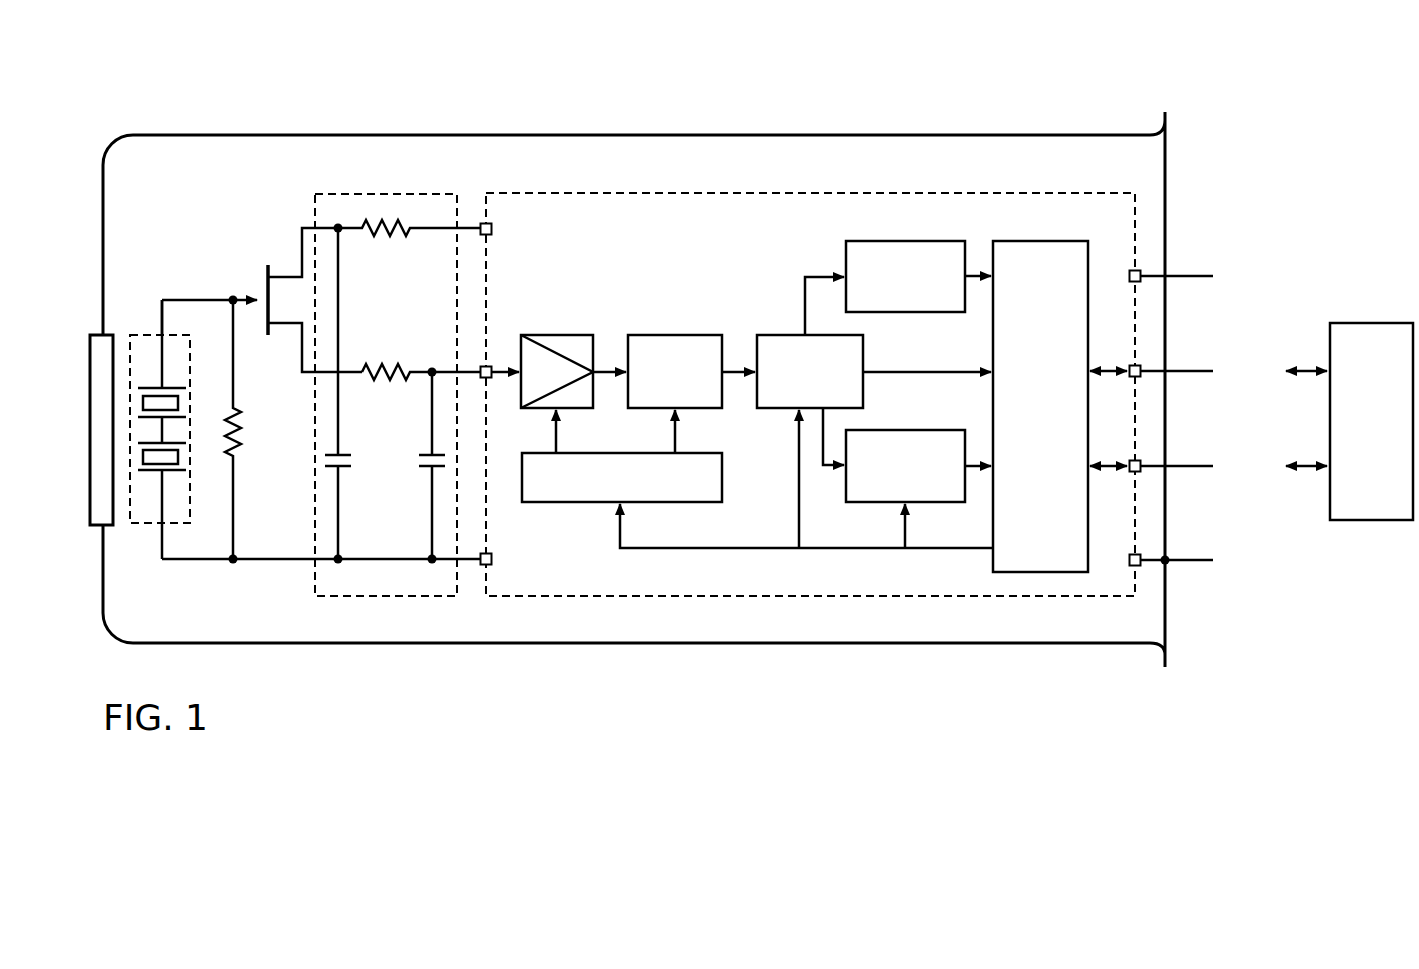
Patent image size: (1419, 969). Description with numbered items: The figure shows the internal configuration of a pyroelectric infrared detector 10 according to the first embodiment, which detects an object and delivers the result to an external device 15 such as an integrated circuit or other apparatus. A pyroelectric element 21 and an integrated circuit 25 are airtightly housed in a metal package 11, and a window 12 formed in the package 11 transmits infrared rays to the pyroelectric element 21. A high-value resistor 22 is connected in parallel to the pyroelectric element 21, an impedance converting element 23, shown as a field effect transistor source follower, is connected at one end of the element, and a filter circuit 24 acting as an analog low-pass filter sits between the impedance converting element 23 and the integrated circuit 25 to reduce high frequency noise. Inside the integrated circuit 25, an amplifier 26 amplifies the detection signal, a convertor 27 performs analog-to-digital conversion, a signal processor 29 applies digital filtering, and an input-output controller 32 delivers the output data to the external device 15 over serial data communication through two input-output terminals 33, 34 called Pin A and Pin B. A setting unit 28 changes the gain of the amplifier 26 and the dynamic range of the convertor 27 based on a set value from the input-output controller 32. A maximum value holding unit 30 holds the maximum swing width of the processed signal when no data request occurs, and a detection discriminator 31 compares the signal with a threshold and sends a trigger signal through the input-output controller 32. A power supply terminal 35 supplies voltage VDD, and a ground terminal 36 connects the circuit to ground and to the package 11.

The pyroelectric infrared detector 10 is at (1192, 100).
The package 11 is at (772, 135).
The window 12 is at (108, 335).
The external device 15 is at (1375, 325).
The pyroelectric element 21 is at (148, 523).
The resistor 22 is at (240, 452).
The impedance converting element 23 is at (258, 275).
The filter circuit 24 is at (315, 200).
The integrated circuit 25 is at (533, 200).
The amplifier 26 is at (572, 337).
The convertor 27 is at (668, 337).
The setting unit 28 is at (555, 502).
The signal processor 29 is at (773, 340).
The maximum value holding unit 30 is at (848, 250).
The detection discriminator 31 is at (912, 430).
The input-output controller 32 is at (1050, 250).
The input-output terminal 33 is at (1190, 371).
The input-output terminal 34 is at (1190, 466).
The power supply terminal 35 is at (1190, 276).
The ground terminal 36 is at (1190, 560).